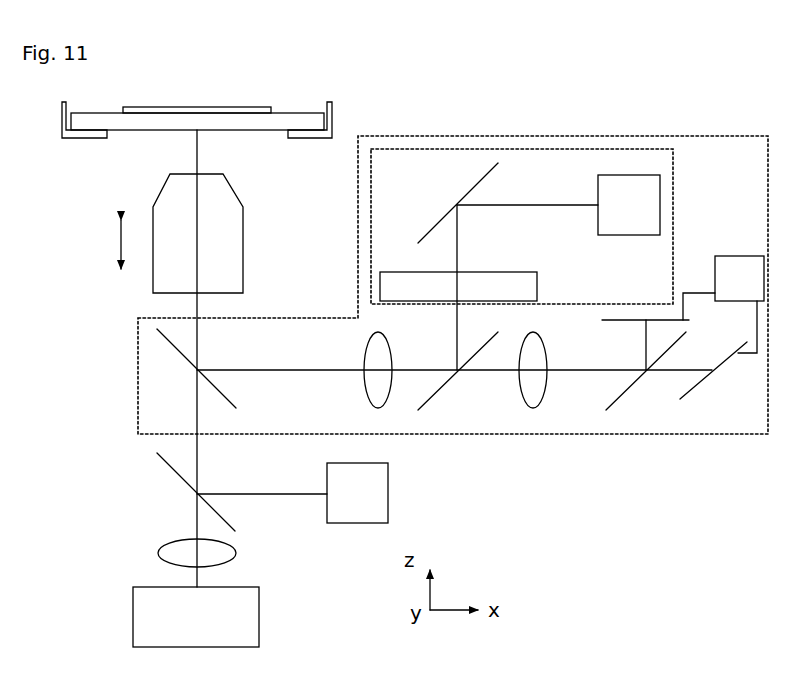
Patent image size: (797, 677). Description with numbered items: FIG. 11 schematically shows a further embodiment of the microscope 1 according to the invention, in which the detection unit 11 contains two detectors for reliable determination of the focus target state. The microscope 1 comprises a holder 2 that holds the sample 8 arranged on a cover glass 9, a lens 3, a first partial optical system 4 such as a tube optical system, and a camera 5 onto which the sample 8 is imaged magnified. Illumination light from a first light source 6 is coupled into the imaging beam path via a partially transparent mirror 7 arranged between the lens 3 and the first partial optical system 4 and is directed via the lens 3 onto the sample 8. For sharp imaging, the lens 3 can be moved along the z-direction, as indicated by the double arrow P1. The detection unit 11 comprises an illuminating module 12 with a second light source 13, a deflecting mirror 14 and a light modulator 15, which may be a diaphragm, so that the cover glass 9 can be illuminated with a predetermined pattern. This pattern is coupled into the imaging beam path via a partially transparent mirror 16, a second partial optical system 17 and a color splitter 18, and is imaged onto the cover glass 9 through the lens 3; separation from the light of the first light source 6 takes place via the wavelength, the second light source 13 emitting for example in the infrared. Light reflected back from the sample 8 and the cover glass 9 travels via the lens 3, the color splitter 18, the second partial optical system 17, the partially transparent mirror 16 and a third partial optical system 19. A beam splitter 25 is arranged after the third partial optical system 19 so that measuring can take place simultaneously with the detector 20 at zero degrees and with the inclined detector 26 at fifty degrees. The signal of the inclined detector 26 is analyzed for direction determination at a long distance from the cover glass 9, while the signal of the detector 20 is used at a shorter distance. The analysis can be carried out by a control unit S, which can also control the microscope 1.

The microscope 1 is at (128, 419).
The holder 2 is at (75, 140).
The lens 3 is at (153, 292).
The first partial optical system 4 is at (236, 553).
The camera 5 is at (259, 632).
The first light source 6 is at (388, 512).
The partially transparent mirror 7 is at (186, 484).
The sample 8 is at (263, 102).
The cover glass 9 is at (237, 132).
The detection unit 11 is at (600, 437).
The illuminating module 12 is at (675, 190).
The second light source 13 is at (626, 175).
The deflecting mirror 14 is at (478, 182).
The light modulator 15 is at (380, 288).
The partially transparent mirror 16 is at (428, 400).
The second partial optical system 17 is at (378, 408).
The color splitter 18 is at (178, 356).
The third partial optical system 19 is at (533, 408).
The detector 20 is at (622, 322).
The beam splitter 25 is at (632, 383).
The inclined detector 26 is at (702, 384).
The double arrow P1 is at (118, 246).
The control unit S is at (752, 256).